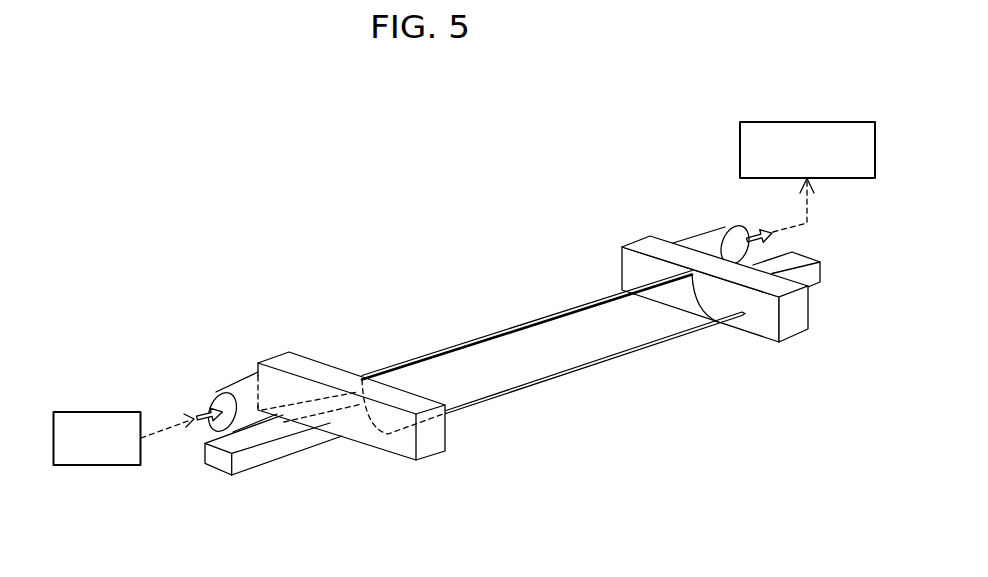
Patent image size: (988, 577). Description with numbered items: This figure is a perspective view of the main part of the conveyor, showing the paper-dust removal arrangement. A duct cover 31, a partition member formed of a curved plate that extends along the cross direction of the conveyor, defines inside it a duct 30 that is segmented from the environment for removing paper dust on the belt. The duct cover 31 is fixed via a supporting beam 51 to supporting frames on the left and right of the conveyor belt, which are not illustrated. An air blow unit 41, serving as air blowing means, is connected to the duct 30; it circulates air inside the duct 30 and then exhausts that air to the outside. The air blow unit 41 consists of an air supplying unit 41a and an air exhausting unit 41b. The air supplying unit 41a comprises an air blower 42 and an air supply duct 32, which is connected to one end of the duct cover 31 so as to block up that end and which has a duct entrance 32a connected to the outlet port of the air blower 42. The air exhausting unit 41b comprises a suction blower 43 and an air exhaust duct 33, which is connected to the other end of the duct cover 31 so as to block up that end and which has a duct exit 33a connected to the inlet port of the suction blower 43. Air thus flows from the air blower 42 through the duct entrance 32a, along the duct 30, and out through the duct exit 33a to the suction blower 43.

The duct 30 is at (546, 358).
The duct cover 31 is at (563, 378).
The air supply duct 32 is at (287, 362).
The duct entrance 32a is at (240, 387).
The air exhaust duct 33 is at (640, 241).
The duct exit 33a is at (707, 240).
The air blow unit 41 is at (648, 70).
The air supplying unit 41a is at (277, 301).
The air exhausting unit 41b is at (708, 131).
The air blower 42 is at (97, 411).
The suction blower 43 is at (740, 150).
The supporting beam 51 is at (252, 460).